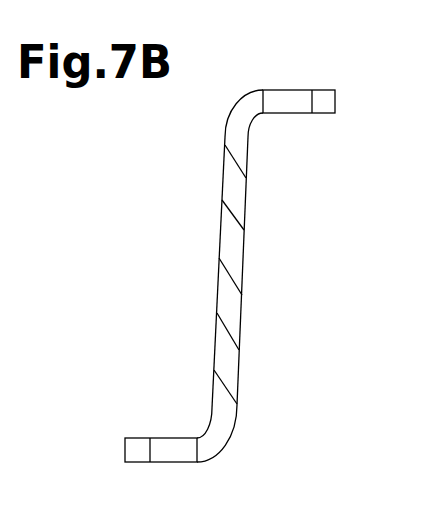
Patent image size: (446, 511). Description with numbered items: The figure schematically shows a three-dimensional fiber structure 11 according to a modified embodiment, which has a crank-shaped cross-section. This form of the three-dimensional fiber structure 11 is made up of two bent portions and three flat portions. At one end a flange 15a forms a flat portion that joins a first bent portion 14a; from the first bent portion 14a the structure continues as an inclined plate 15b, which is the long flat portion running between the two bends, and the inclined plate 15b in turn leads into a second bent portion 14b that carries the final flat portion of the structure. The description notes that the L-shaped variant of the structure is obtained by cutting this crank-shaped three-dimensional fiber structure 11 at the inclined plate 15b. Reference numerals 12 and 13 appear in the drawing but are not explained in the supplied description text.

The three-dimensional fiber structure 11 is at (180, 158).
The straight portion 12 is at (216, 287).
The protrusions 13 is at (312, 100).
The first bent portion 14a is at (218, 437).
The second bent portion 14b is at (241, 108).
The flange 15a is at (288, 107).
The inclined plate 15b is at (242, 258).